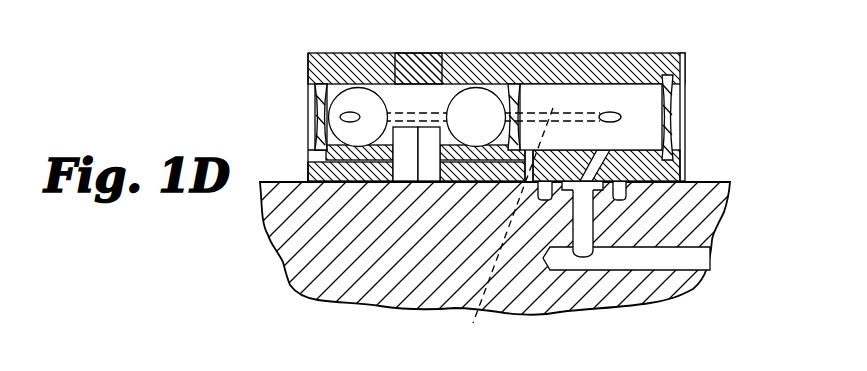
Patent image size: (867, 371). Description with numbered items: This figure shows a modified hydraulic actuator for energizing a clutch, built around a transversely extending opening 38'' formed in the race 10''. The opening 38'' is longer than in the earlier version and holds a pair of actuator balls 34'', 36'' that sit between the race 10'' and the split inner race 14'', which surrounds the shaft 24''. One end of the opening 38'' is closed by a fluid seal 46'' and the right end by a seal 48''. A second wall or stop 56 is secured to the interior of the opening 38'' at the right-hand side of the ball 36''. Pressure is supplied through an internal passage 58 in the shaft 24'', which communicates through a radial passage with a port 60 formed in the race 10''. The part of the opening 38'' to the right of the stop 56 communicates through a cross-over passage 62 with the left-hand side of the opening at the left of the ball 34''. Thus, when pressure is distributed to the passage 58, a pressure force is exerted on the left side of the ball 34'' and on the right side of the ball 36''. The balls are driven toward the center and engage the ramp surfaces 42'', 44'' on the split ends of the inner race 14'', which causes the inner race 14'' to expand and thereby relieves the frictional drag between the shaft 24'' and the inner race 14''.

The race 10'' is at (521, 92).
The inner race 14'' is at (416, 257).
The shaft 24'' is at (522, 250).
The actuator ball 34'' is at (351, 75).
The actuator ball 36'' is at (461, 75).
The opening 38'' is at (403, 48).
The ramp surface 42'' is at (396, 239).
The ramp surface 44'' is at (432, 239).
The fluid seal 46'' is at (272, 92).
The seal 48'' is at (719, 109).
The stop 56 is at (531, 110).
The internal passage 58 is at (658, 258).
The port 60 is at (600, 162).
The cross-over passage 62 is at (510, 230).